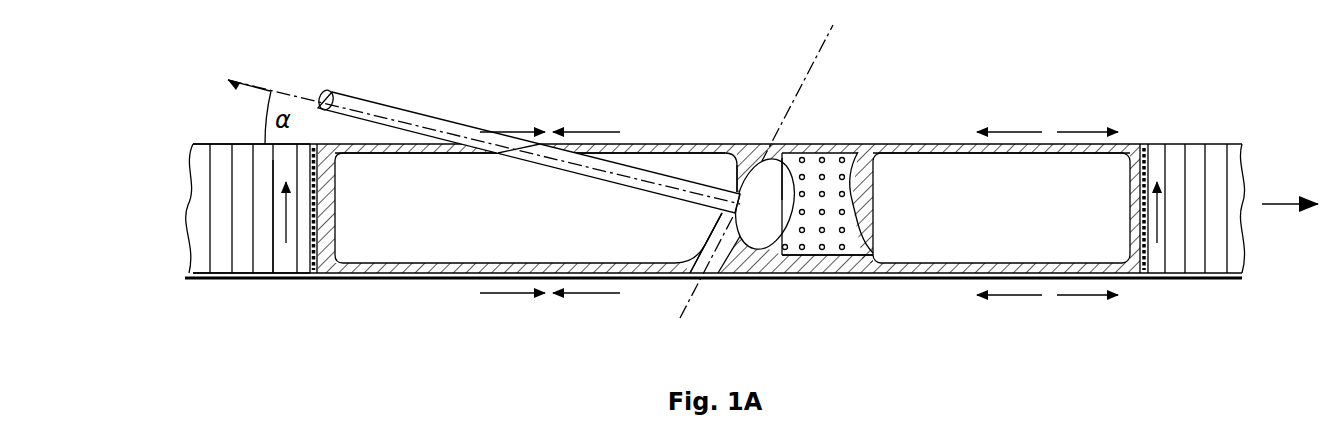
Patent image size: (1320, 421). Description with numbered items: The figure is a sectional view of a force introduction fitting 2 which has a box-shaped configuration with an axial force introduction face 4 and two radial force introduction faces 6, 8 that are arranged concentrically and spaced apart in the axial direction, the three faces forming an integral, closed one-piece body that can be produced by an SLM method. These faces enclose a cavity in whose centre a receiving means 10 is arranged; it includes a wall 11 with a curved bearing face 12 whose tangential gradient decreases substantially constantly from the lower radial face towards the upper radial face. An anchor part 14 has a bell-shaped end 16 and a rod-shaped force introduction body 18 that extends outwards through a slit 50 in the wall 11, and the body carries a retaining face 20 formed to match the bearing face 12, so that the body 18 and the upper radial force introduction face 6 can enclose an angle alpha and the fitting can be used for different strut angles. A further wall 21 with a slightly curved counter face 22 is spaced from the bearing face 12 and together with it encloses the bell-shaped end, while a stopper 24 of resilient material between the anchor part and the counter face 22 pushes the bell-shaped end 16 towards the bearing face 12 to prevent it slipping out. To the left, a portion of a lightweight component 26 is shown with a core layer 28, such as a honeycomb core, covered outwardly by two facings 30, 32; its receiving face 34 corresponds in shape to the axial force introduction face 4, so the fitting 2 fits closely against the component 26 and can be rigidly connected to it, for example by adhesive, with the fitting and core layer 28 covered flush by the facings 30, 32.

The force introduction fitting 2 is at (978, 108).
The axial force introduction face 4 is at (1148, 175).
The upper radial force introduction face 6 is at (907, 143).
The lower radial force introduction face 8 is at (625, 268).
The receiving means 10 is at (713, 136).
The wall 11 is at (733, 275).
The bearing face 12 is at (748, 252).
The anchor part 14 is at (420, 114).
The bell-shaped end 16 is at (772, 186).
The rod-shaped force introduction body 18 is at (502, 126).
The retaining face 20 is at (750, 172).
The wall 21 is at (873, 252).
The counter face 22 is at (860, 198).
The stopper 24 is at (823, 235).
The lightweight component 26 is at (207, 282).
The core layer 28 is at (197, 193).
The facing 30 is at (272, 276).
The facing 32 is at (205, 143).
The receiving face 34 is at (300, 200).
The slit 50 is at (735, 210).